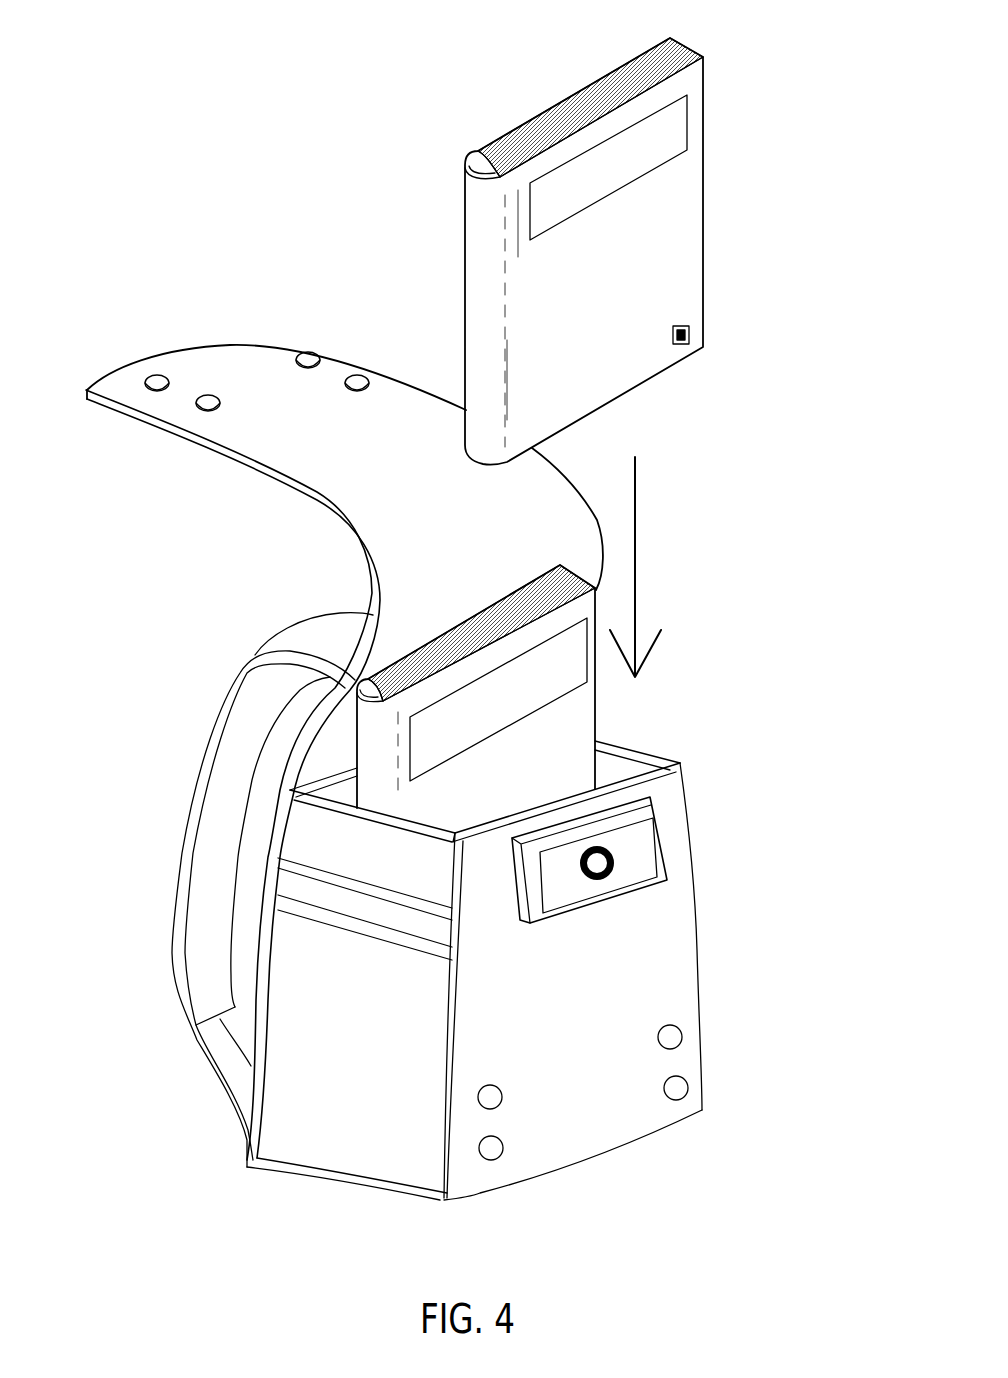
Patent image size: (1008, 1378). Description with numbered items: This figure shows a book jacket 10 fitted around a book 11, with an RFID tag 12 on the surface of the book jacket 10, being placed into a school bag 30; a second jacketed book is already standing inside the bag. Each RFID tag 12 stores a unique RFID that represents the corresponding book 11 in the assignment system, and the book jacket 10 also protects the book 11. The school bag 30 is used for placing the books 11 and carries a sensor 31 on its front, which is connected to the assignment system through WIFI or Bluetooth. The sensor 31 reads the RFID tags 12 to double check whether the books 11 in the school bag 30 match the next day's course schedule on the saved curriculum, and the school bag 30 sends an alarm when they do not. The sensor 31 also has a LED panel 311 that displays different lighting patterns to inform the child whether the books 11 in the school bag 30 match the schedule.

The book jacket 10 is at (551, 418).
The book 11 is at (557, 120).
The RFID tag 12 is at (689, 324).
The school bag 30 is at (460, 772).
The sensor 31 is at (690, 877).
The LED panel 311 is at (643, 892).